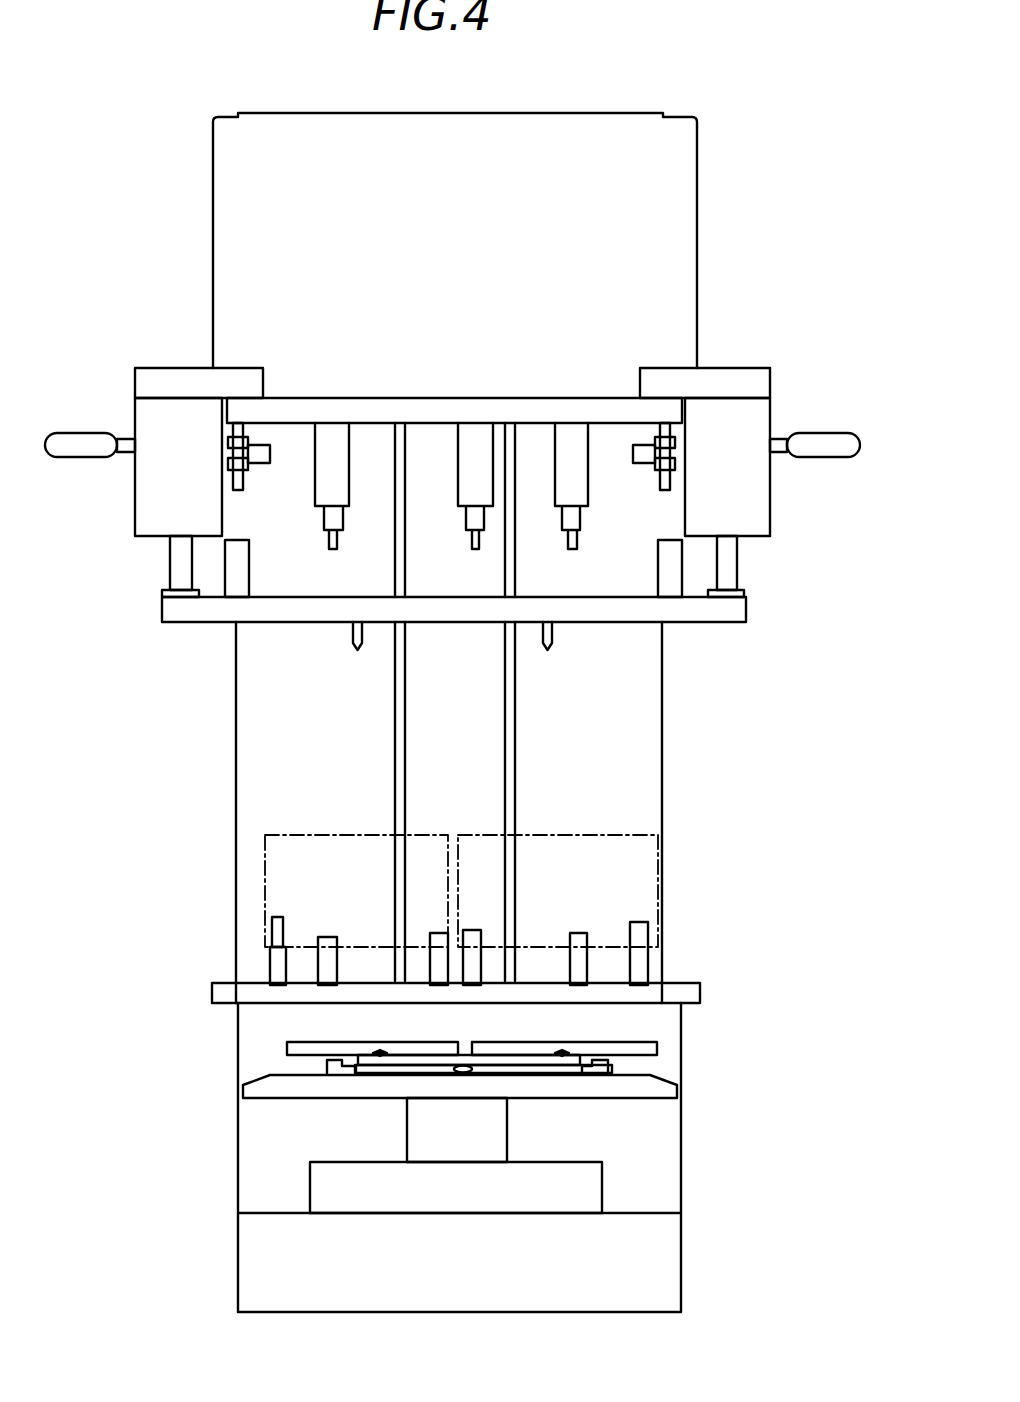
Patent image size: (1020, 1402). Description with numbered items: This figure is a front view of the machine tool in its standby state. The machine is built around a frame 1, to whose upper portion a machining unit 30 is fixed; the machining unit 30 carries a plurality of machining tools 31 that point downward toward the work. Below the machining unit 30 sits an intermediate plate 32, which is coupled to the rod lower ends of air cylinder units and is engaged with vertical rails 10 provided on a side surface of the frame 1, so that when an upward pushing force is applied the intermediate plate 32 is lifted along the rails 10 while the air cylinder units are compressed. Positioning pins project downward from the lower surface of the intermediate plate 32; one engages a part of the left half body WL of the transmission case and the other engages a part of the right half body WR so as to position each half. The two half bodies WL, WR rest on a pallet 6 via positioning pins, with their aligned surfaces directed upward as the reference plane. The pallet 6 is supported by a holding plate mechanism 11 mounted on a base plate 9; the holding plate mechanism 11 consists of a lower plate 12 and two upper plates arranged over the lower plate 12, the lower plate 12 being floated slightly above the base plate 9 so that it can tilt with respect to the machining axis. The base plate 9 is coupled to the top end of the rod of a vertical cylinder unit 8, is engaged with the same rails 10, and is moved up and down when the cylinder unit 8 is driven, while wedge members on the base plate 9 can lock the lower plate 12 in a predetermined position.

The frame 1 is at (633, 710).
The machining unit 30 is at (625, 291).
The machining tool 31 is at (575, 549).
The intermediate plate 32 is at (432, 612).
The rail 10 is at (397, 699).
The left half body WL is at (345, 867).
The right half body WR is at (592, 873).
The pallet 6 is at (687, 988).
The lower plate 12 is at (447, 1062).
The base plate 9 is at (667, 1085).
The cylinder unit 8 is at (410, 1125).
The holding plate mechanism 11 is at (526, 1114).